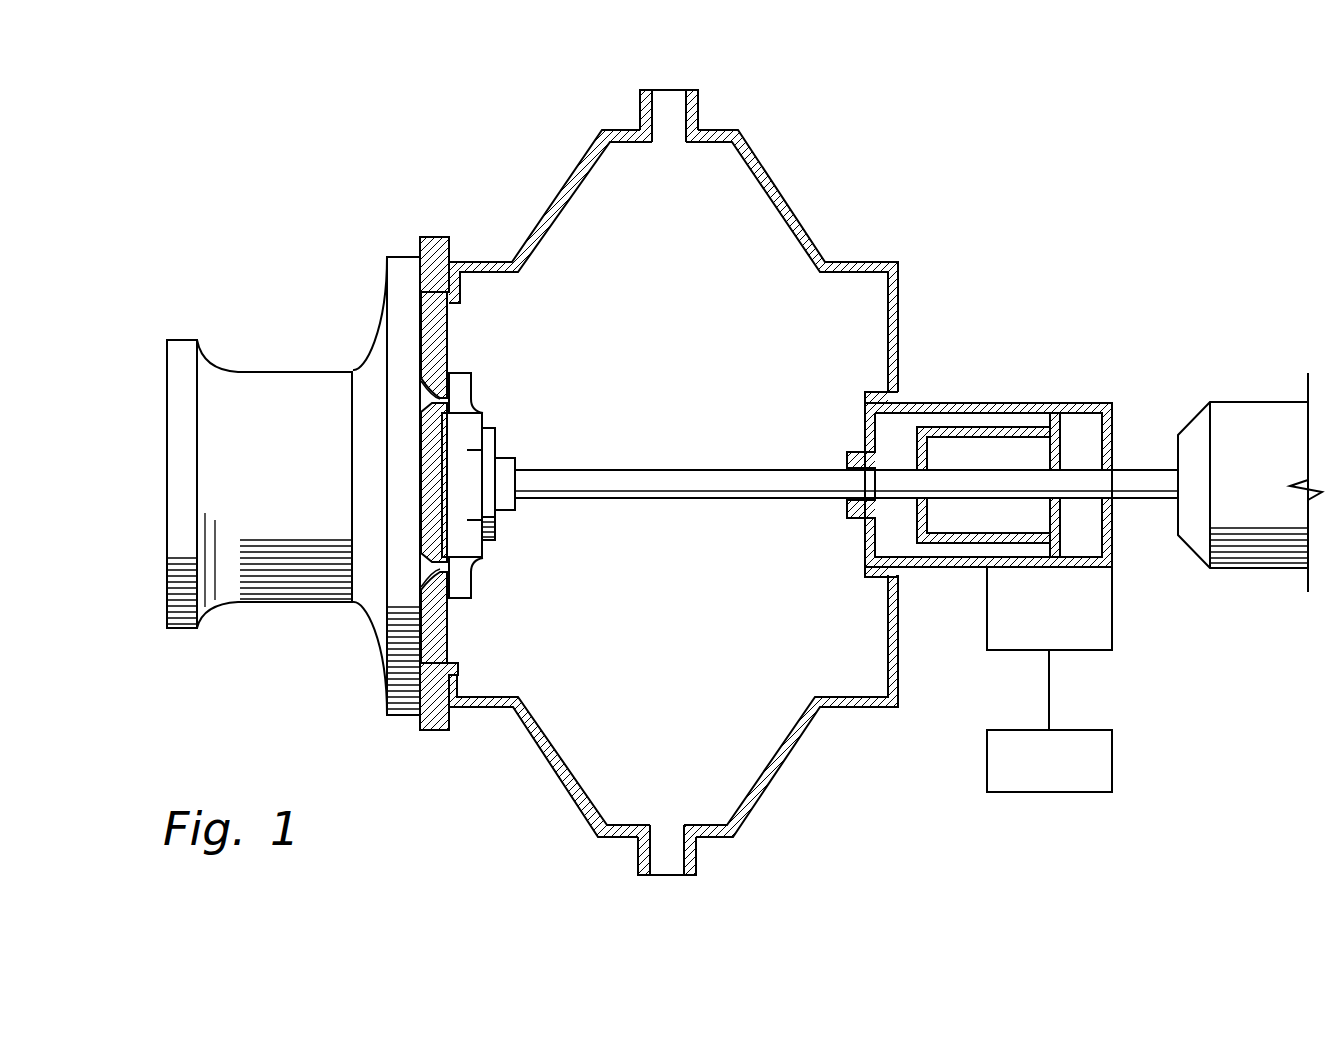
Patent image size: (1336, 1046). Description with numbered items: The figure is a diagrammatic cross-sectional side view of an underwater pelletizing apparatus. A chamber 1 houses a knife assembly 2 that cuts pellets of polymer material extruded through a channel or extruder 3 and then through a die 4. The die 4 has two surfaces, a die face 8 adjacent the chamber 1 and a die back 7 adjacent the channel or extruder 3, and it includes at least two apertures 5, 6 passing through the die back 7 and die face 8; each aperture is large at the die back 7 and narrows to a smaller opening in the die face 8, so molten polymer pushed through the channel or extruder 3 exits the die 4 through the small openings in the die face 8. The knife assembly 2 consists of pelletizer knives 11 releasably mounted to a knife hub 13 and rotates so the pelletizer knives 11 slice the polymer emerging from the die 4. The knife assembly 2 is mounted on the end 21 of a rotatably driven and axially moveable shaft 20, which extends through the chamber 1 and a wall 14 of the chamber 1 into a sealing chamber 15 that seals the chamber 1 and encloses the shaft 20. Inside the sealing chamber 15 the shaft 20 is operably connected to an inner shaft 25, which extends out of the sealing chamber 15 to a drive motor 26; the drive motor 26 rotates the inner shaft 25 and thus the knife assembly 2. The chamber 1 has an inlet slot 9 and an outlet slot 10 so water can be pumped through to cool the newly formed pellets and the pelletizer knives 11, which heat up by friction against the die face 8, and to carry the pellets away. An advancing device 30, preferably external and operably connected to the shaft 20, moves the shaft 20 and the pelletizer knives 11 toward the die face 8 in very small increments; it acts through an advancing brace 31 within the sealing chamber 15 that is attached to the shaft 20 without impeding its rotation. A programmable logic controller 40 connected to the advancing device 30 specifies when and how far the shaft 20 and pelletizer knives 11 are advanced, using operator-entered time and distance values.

The chamber 1 is at (780, 243).
The knife assembly 2 is at (520, 485).
The channel or extruder 3 is at (280, 380).
The die 4 is at (447, 327).
The aperture 5 is at (425, 395).
The aperture 6 is at (427, 570).
The die back 7 is at (420, 345).
The die face 8 is at (449, 345).
The inlet slot 9 is at (673, 100).
The outlet slot 10 is at (665, 865).
The pelletizer knives 11 is at (465, 385).
The knife hub 13 is at (506, 512).
The wall 14 is at (888, 334).
The sealing chamber 15 is at (880, 432).
The shaft 20 is at (690, 478).
The end 21 is at (530, 468).
The inner shaft 25 is at (975, 480).
The drive motor 26 is at (1228, 410).
The advancing device 30 is at (1112, 612).
The advancing brace 31 is at (1062, 440).
The programmable logic controller (PLC) 40 is at (1112, 764).